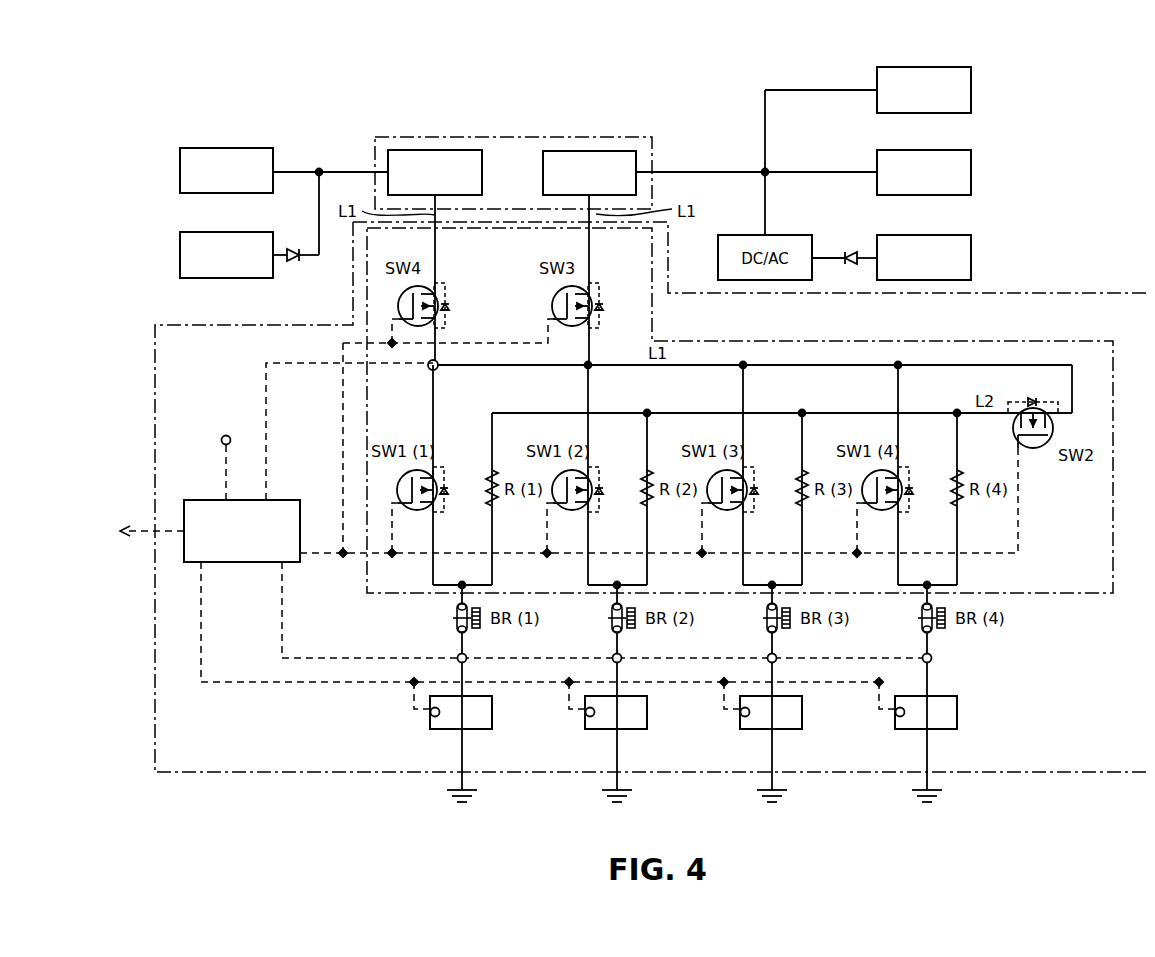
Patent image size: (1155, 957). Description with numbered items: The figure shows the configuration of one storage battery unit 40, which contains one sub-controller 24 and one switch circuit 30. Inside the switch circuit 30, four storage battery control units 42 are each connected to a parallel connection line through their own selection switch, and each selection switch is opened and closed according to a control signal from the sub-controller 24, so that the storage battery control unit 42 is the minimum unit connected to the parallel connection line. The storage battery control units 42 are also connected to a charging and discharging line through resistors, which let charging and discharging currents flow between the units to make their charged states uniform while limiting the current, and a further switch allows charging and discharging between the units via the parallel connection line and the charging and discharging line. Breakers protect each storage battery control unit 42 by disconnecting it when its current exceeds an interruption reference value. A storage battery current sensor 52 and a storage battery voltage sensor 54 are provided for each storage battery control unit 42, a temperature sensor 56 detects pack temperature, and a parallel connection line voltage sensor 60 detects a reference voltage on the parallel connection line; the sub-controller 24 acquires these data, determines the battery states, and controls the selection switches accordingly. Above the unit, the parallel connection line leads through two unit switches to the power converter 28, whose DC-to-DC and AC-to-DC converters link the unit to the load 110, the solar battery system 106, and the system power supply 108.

The load 110 is at (238, 148).
The solar battery system 106 is at (238, 232).
The system power supply 108 is at (937, 67).
The power converter 28 is at (650, 137).
The storage battery unit 40 is at (1040, 294).
The switch circuit 30 is at (1098, 341).
The parallel connection line voltage sensor 60 is at (430, 370).
The sub-controller 24 is at (283, 500).
The temperature sensor 56 is at (221, 439).
The storage battery current sensor 52 is at (457, 655).
The storage battery voltage sensor 54 is at (433, 717).
The storage battery control unit 42 is at (476, 729).